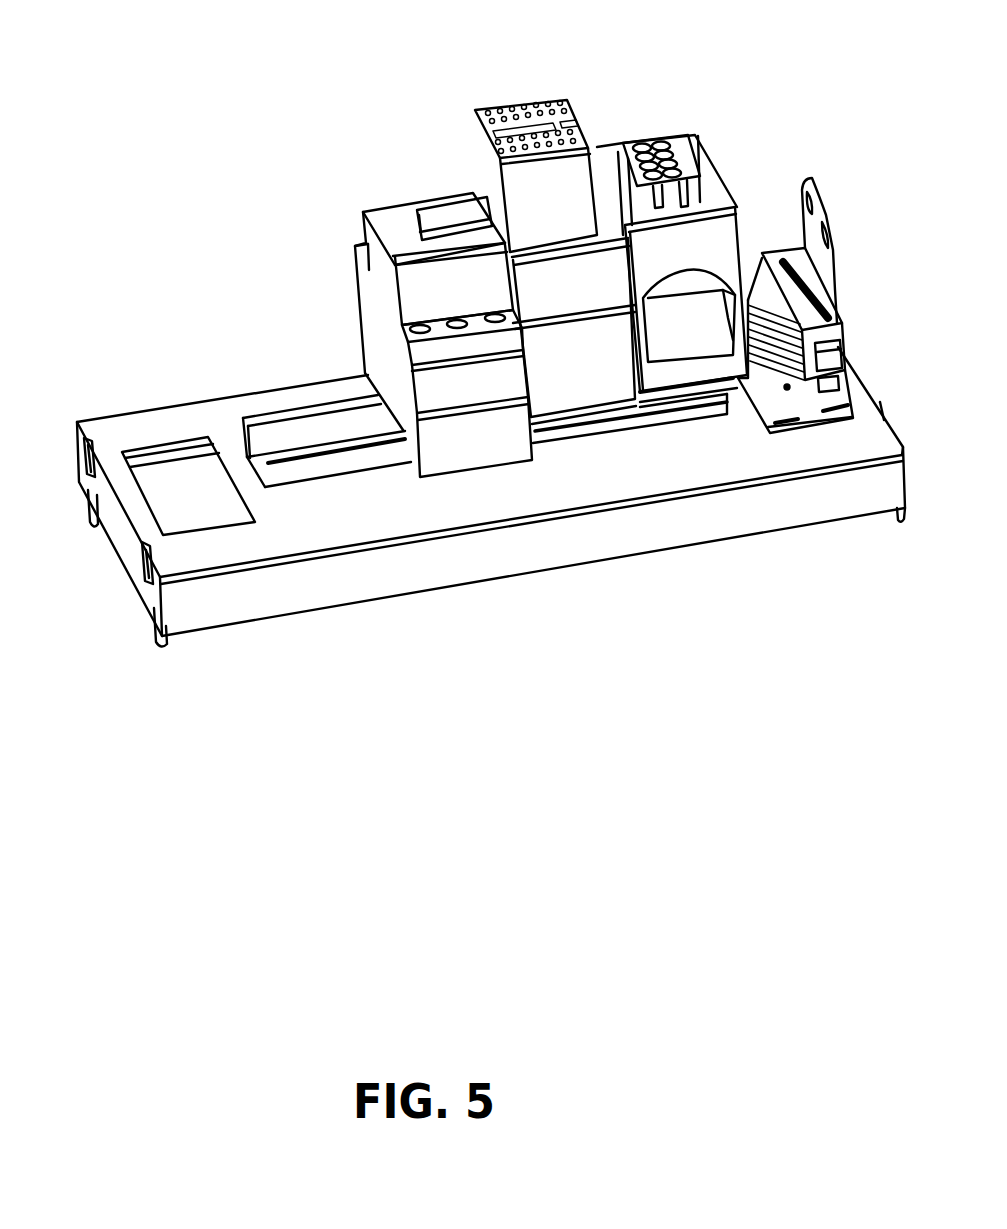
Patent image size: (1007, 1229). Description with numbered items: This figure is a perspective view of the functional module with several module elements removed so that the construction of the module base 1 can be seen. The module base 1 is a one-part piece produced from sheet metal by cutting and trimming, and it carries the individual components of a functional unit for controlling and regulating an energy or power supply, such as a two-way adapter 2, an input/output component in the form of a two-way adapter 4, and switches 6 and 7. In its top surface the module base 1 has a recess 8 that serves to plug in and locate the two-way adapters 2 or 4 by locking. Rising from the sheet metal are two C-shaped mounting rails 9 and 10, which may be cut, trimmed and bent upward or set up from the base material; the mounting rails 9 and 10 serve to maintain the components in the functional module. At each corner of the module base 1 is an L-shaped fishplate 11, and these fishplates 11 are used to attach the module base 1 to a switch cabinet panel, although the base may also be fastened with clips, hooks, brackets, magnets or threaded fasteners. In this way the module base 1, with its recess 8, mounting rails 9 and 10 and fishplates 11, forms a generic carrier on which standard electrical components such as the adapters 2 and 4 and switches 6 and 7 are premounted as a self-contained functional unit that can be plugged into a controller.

The module base 1 is at (660, 520).
The two-way adapter 2 is at (805, 403).
The two-way adapter 4 is at (657, 240).
The switch 6 is at (408, 218).
The switch 7 is at (573, 198).
The recess 8 is at (178, 505).
The mounting rail 9 is at (303, 425).
The mounting rail 10 is at (303, 463).
The fishplate 11 is at (165, 638).